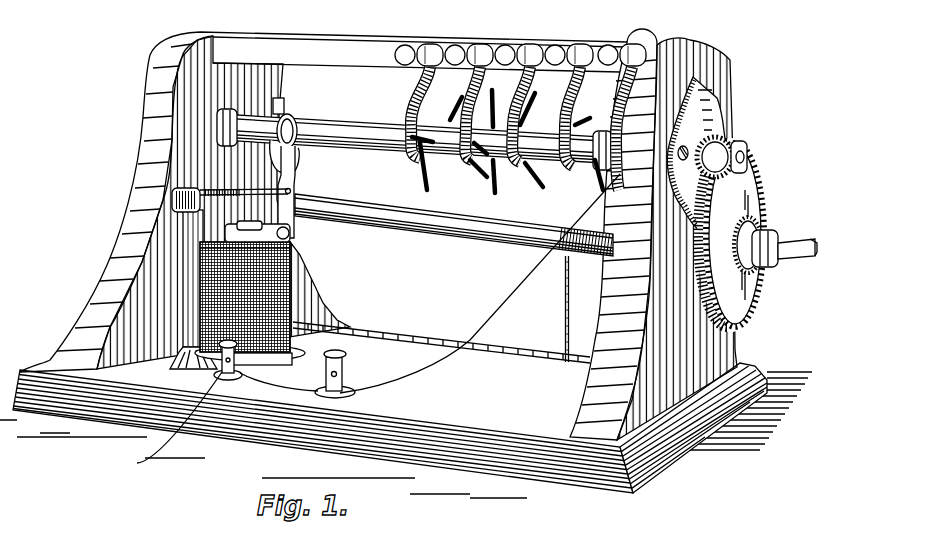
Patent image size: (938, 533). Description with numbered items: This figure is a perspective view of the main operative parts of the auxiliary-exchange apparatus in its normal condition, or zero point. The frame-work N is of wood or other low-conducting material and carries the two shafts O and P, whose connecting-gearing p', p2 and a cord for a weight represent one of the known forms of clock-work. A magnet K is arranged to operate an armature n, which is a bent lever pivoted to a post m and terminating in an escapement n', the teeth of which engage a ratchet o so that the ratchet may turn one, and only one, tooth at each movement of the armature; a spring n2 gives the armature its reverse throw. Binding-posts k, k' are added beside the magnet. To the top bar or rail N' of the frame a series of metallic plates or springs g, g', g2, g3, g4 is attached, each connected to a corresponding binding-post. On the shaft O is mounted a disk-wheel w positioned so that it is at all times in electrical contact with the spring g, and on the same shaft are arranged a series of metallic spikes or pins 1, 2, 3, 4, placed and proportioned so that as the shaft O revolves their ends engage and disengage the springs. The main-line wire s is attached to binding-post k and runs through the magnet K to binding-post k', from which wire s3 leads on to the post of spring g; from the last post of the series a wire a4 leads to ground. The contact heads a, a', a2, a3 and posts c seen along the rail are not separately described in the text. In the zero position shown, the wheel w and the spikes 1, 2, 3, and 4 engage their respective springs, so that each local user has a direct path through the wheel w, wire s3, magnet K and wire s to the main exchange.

The frame-work N is at (378, 234).
The top bar or rail N' is at (420, 54).
The shaft O is at (414, 137).
The ratchet o is at (287, 123).
The escapement n' is at (295, 189).
The spring n2 is at (229, 272).
The armature n is at (249, 228).
The post m is at (291, 236).
The magnet K is at (292, 266).
The shaft P is at (471, 212).
The disk-wheel w is at (621, 176).
The rod b is at (574, 309).
The connecting-gearing p' is at (724, 151).
The connecting-gearing p2 is at (757, 281).
The contact posts c is at (572, 44).
The contact disc a is at (608, 55).
The contact disc a' is at (555, 55).
The contact disc a2 is at (505, 55).
The contact disc a3 is at (455, 55).
The wire a4 is at (413, 26).
The metallic plate or spring g is at (621, 128).
The metallic plate or spring g' is at (579, 116).
The metallic plate or spring g2 is at (514, 114).
The metallic plate or spring g3 is at (465, 113).
The metallic plate or spring g4 is at (414, 112).
The metallic spike or pin 1 is at (585, 152).
The metallic spike or pin 2 is at (522, 162).
The metallic spike or pin 3 is at (470, 167).
The metallic spike or pin 4 is at (418, 158).
The binding-post k is at (222, 404).
The binding-post k' is at (336, 374).
The main-line wire s is at (223, 421).
The wire s3 is at (480, 283).